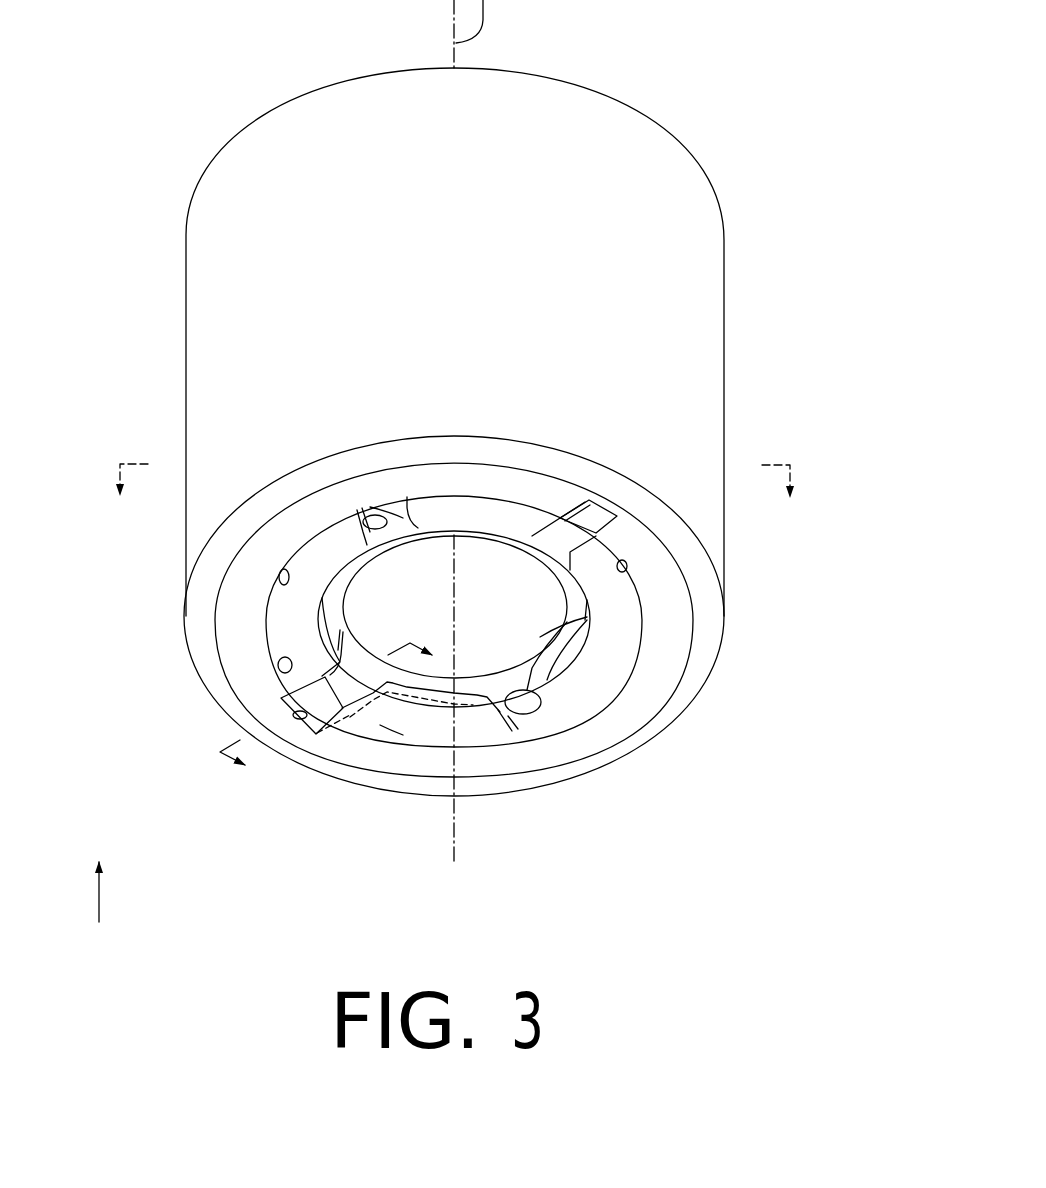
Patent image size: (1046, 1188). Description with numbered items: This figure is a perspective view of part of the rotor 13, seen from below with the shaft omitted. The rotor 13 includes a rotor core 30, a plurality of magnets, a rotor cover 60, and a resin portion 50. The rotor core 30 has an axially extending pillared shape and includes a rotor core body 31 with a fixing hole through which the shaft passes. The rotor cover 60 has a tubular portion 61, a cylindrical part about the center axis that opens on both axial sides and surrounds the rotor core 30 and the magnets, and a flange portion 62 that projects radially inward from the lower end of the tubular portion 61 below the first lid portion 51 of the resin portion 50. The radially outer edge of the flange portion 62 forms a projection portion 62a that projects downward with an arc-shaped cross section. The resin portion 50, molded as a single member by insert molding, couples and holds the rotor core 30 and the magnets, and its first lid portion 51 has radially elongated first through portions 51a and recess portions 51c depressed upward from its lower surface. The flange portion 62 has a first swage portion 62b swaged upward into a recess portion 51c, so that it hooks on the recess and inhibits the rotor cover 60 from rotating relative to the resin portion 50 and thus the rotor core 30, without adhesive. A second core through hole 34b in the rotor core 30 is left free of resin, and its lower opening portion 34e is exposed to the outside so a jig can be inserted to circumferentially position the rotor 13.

The rotor 13 is at (740, 107).
The rotor cover 60 is at (728, 239).
The tubular portion 61 is at (703, 377).
The flange portion 62 is at (675, 633).
The projection portion 62a is at (667, 710).
The first swage portion 62b is at (626, 541).
The resin portion 50 is at (607, 699).
The first lid portion 51 is at (590, 700).
The first through portion 51a is at (360, 538).
The recess portion 51c is at (590, 502).
The rotor core 30 is at (478, 697).
The rotor core body 31 is at (340, 630).
The second core through hole 34b is at (576, 695).
The opening portion 34e is at (545, 633).